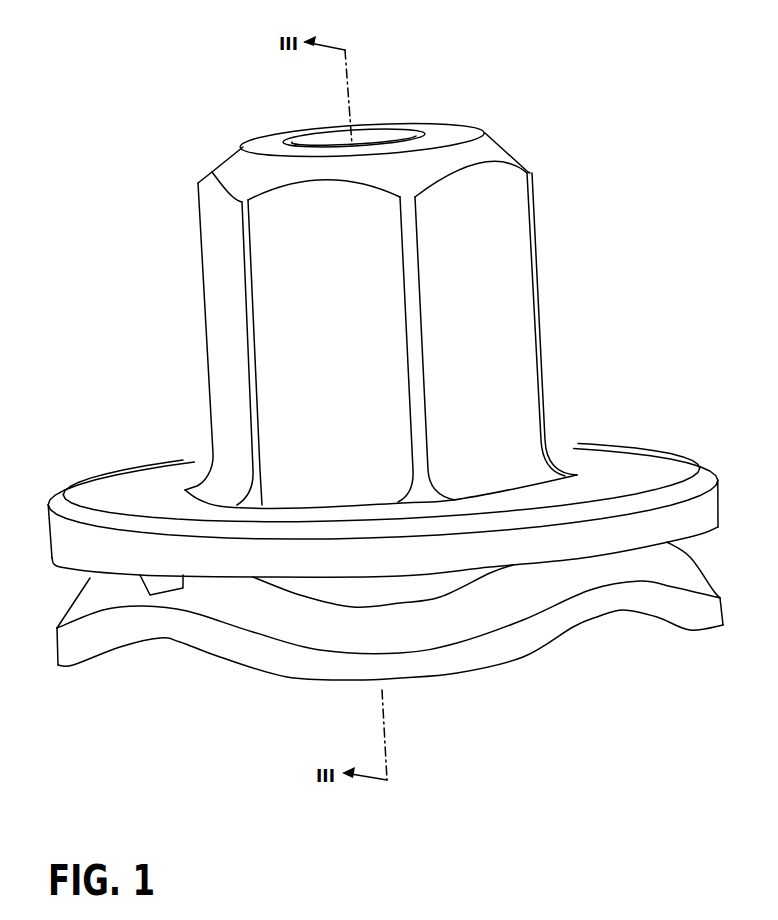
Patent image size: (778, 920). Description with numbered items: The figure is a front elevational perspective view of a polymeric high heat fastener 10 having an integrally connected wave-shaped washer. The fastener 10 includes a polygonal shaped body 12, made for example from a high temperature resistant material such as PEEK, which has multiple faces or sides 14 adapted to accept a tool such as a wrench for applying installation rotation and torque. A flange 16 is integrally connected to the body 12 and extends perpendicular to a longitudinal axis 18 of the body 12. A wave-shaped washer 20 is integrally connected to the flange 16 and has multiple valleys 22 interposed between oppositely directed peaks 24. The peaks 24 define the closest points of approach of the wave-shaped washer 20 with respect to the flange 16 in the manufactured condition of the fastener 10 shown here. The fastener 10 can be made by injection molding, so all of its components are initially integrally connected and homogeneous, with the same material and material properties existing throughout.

The polymeric high heat fastener 10 is at (586, 128).
The polygonal shaped body 12 is at (535, 272).
The faces or sides 14 is at (300, 323).
The flange 16 is at (140, 490).
The longitudinal axis 18 is at (357, 85).
The wave-shaped washer 20 is at (57, 647).
The valleys 22 is at (312, 630).
The peaks 24 is at (145, 602).